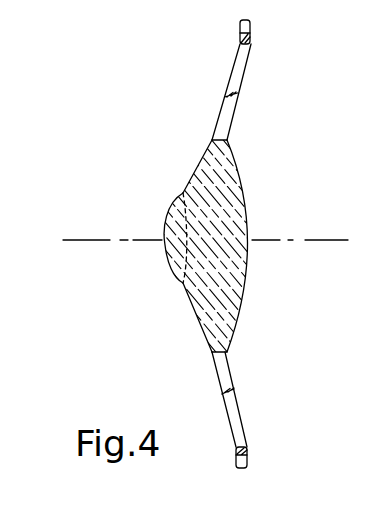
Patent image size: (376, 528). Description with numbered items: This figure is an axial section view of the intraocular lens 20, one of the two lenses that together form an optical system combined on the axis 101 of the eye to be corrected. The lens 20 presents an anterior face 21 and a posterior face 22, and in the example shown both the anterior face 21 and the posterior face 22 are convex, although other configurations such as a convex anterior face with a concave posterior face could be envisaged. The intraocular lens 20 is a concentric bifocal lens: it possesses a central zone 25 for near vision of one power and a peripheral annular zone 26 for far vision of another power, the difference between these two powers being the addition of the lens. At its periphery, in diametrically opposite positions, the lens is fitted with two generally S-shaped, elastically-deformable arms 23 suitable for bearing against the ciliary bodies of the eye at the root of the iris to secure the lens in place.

The intraocular lens 20 is at (194, 244).
The anterior face 21 is at (200, 156).
The posterior face 22 is at (237, 155).
The arms 23 is at (248, 57).
The central zone 25 is at (171, 219).
The peripheral annular zone 26 is at (194, 310).
The axis 101 is at (328, 241).